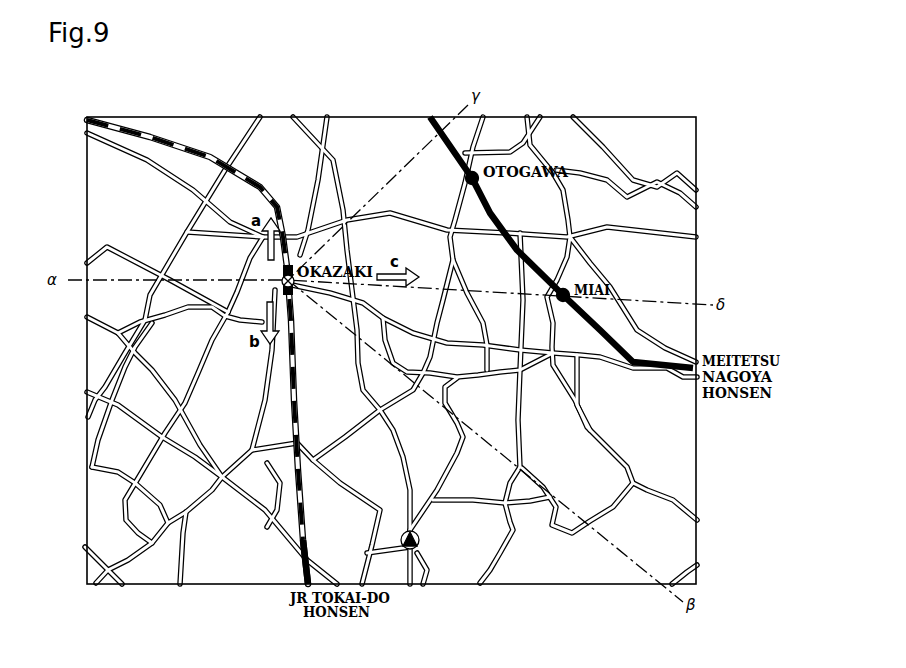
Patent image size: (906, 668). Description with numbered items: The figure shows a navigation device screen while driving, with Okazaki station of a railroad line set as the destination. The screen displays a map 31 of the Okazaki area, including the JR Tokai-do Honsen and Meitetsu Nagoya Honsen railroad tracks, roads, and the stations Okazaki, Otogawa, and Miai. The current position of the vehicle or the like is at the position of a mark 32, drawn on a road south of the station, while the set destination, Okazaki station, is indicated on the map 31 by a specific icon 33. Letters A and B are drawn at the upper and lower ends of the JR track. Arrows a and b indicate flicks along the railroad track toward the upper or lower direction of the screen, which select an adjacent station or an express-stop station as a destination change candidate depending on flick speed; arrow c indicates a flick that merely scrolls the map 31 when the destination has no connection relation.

The map 31 is at (607, 578).
The mark 32 is at (416, 552).
The specific icon 33 is at (285, 283).
The railway line start point A is at (102, 117).
The railway line end point B is at (300, 579).